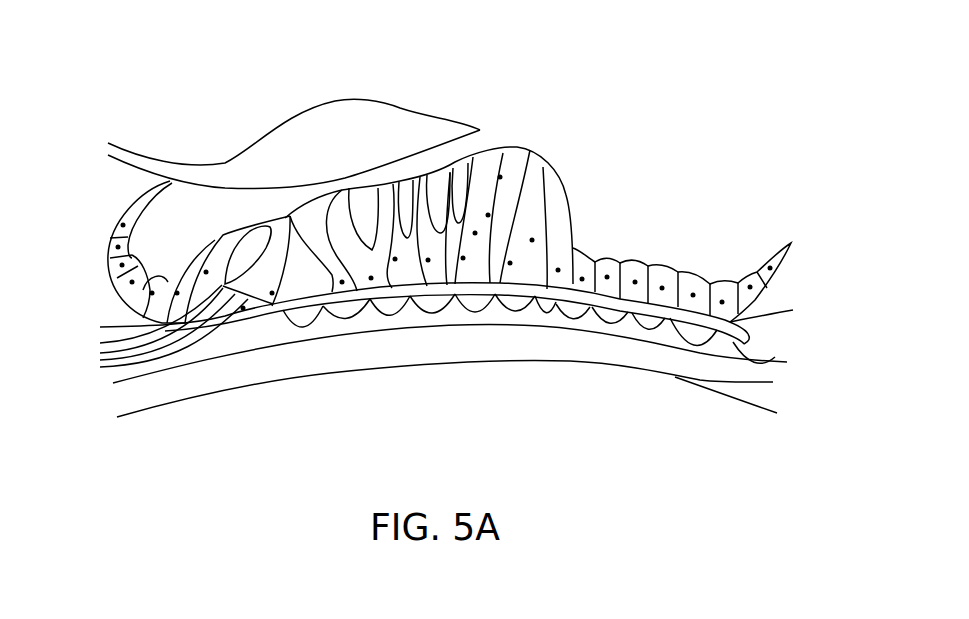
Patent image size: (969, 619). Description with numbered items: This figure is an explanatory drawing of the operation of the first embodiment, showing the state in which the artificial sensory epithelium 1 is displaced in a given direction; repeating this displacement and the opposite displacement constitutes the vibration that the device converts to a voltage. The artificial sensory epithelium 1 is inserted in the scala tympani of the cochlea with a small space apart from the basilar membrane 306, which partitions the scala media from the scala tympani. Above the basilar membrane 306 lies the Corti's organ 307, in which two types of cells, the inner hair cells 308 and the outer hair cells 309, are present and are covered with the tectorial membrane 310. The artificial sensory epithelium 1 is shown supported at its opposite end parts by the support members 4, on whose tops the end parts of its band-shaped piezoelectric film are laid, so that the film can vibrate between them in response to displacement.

The artificial sensory epithelium 1 is at (543, 376).
The support member 4 is at (392, 357).
The basilar membrane 306 is at (654, 300).
The Corti's organ 307 is at (577, 203).
The inner hair cells 308 is at (223, 229).
The outer hair cells 309 is at (483, 193).
The tectorial membrane 310 is at (393, 107).